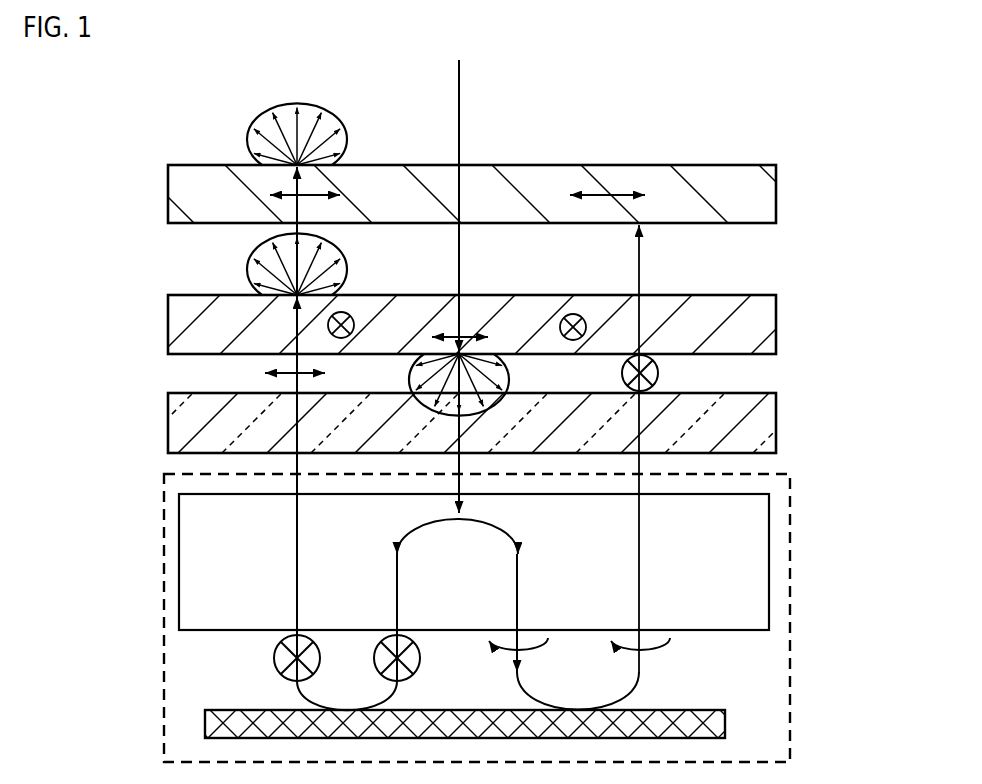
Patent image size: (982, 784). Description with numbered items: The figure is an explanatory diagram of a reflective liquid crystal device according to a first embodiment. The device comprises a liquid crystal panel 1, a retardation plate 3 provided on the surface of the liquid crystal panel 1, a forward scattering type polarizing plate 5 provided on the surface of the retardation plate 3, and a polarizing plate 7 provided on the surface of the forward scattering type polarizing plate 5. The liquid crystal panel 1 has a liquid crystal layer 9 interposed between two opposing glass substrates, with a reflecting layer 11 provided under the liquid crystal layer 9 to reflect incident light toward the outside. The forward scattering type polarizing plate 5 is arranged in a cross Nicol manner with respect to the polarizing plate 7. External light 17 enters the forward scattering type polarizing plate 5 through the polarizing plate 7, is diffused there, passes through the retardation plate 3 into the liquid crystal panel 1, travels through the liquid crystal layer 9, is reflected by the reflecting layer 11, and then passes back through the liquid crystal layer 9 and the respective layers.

The liquid crystal panel 1 is at (790, 523).
The retardation plate 3 is at (776, 410).
The forward scattering type polarizing plate 5 is at (776, 316).
The polarizing plate 7 is at (776, 196).
The liquid crystal layer 9 is at (769, 590).
The reflecting layer 11 is at (725, 722).
The external light 17 is at (459, 112).